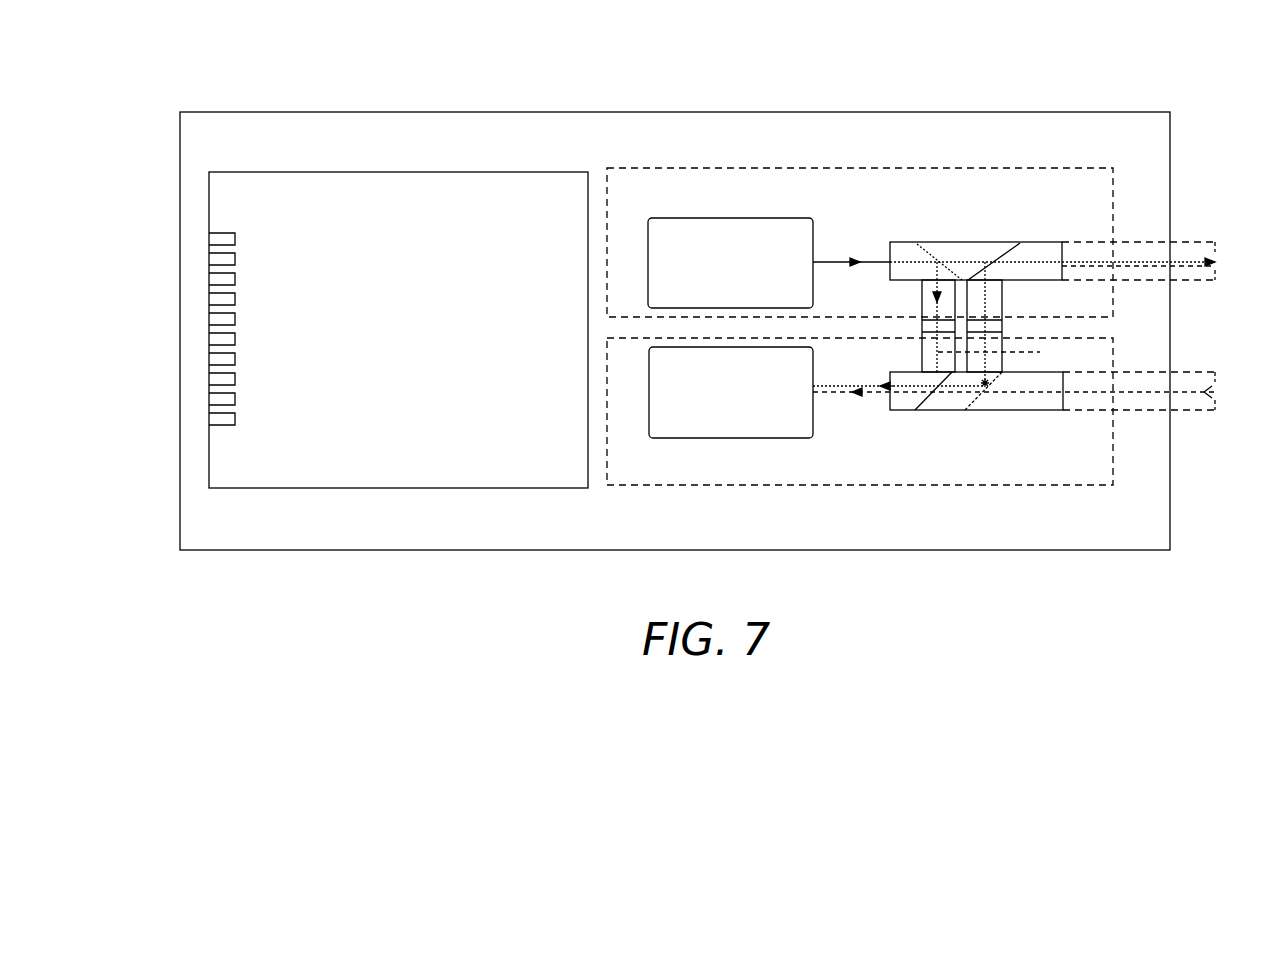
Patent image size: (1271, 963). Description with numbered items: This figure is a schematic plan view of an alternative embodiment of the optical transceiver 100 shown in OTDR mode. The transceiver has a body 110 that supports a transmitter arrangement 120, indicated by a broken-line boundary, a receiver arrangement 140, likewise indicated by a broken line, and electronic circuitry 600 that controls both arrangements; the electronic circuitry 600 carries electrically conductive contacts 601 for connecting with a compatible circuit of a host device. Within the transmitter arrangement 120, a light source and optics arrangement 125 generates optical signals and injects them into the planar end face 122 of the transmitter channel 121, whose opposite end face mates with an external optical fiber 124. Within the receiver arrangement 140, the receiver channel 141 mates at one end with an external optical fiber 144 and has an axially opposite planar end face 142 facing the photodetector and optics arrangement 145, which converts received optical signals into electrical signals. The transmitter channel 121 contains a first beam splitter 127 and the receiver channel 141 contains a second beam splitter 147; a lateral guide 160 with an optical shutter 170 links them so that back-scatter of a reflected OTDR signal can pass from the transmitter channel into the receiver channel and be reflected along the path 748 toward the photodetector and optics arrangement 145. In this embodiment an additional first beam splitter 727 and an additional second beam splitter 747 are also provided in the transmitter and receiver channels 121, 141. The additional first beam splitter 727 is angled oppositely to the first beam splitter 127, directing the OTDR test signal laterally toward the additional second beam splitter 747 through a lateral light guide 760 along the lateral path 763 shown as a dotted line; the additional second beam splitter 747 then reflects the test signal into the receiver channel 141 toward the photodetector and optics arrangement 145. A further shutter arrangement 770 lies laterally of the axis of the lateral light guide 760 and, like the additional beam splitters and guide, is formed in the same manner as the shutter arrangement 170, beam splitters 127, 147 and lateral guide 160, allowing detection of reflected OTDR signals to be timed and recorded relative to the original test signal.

The optical transceiver 100 is at (240, 80).
The body 110 is at (232, 551).
The transmitter arrangement 120 is at (604, 170).
The transmitter channel 121 is at (936, 244).
The planar end face 122 is at (889, 251).
The external optical fiber 124 is at (1196, 240).
The light source and optics arrangement 125 is at (813, 219).
The first beam splitter 127 is at (1005, 250).
The receiver arrangement 140 is at (603, 488).
The receiver channel 141 is at (1050, 410).
The planar end face 142 is at (890, 398).
The external optical fiber 144 is at (1203, 418).
The photodetector and optics arrangement 145 is at (813, 438).
The second beam splitter 147 is at (988, 388).
The lateral guide 160 is at (1002, 298).
The optical shutter 170 is at (1002, 326).
The electronic circuitry 600 is at (279, 172).
The electrically conductive contacts 601 is at (237, 316).
The additional first beam splitter 727 is at (942, 248).
The additional second beam splitter 747 is at (925, 410).
The path 748 is at (841, 372).
The lateral light guide 760 is at (922, 298).
The lateral path 763 is at (1009, 354).
The further shutter arrangement 770 is at (922, 326).